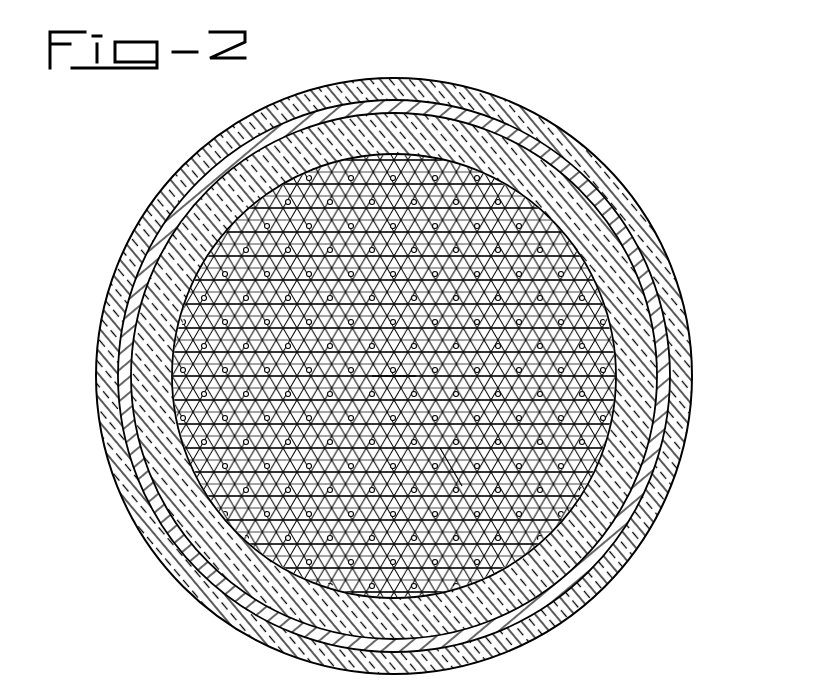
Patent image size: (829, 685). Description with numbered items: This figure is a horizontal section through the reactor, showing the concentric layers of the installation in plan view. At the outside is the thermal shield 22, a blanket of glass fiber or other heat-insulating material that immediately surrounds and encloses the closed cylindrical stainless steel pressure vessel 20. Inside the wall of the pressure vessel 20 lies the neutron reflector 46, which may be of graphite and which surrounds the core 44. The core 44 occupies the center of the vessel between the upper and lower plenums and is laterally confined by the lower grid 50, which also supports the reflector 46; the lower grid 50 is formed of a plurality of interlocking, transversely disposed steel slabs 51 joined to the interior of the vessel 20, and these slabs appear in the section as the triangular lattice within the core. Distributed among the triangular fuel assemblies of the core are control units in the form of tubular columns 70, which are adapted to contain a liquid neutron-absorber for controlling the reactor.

The thermal shield 22 is at (623, 201).
The neutron reflector 46 is at (683, 319).
The pressure vessel 20 is at (662, 397).
The lower grid 50 is at (585, 430).
The tubular columns 70 is at (402, 238).
The core 44 is at (432, 340).
The steel slabs 51 is at (462, 455).